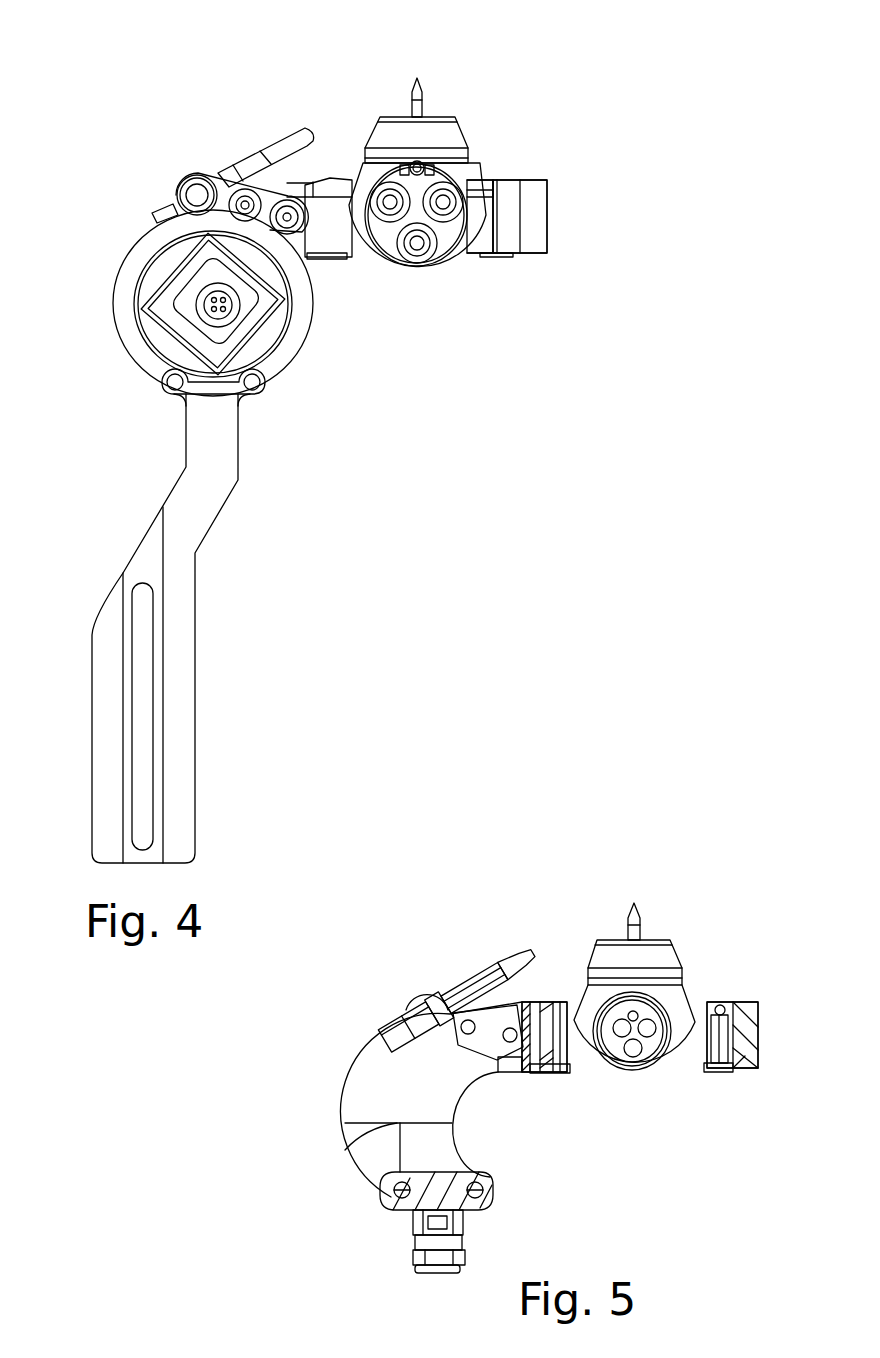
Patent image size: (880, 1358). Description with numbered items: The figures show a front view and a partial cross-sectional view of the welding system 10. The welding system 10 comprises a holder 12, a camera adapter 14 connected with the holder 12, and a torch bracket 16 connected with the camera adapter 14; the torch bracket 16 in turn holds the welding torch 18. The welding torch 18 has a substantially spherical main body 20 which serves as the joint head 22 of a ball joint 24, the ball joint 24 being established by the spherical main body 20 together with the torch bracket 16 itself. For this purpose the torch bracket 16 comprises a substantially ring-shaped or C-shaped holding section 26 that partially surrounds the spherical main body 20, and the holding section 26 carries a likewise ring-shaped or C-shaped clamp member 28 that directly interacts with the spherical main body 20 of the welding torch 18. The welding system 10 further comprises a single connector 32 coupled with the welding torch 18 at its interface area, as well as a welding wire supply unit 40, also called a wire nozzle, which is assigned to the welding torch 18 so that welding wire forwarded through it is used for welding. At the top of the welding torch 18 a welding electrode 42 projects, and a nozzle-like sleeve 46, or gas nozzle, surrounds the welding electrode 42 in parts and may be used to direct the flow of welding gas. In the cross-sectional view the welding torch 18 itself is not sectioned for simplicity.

In FIG. 4, the welding system 10 is at (73, 110).
In FIG. 5, the welding system 10 is at (403, 935).
In FIG. 4, the holder 12 is at (180, 792).
In FIG. 5, the holder 12 is at (431, 1137).
In FIG. 4, the camera adapter 14 is at (110, 300).
In FIG. 4, the torch bracket 16 is at (335, 236).
In FIG. 5, the torch bracket 16 is at (530, 1073).
In FIG. 4, the welding torch 18 is at (365, 82).
In FIG. 5, the welding torch 18 is at (577, 888).
In FIG. 4, the spherical main body 20 is at (402, 213).
In FIG. 5, the spherical main body 20 is at (670, 1000).
In FIG. 4, the joint head 22 is at (485, 163).
In FIG. 5, the joint head 22 is at (582, 953).
In FIG. 4, the ball joint 24 is at (525, 172).
In FIG. 5, the ball joint 24 is at (693, 1082).
In FIG. 4, the holding section 26 is at (543, 218).
In FIG. 5, the holding section 26 is at (750, 1027).
In FIG. 4, the clamp member 28 is at (487, 242).
In FIG. 4, the single connector 32 is at (387, 243).
In FIG. 4, the welding wire supply unit 40 is at (277, 128).
In FIG. 5, the welding wire supply unit 40 is at (493, 957).
In FIG. 4, the welding electrode 42 is at (420, 92).
In FIG. 5, the welding electrode 42 is at (640, 905).
In FIG. 4, the nozzle-like sleeve 46 is at (463, 135).
In FIG. 5, the nozzle-like sleeve 46 is at (665, 955).